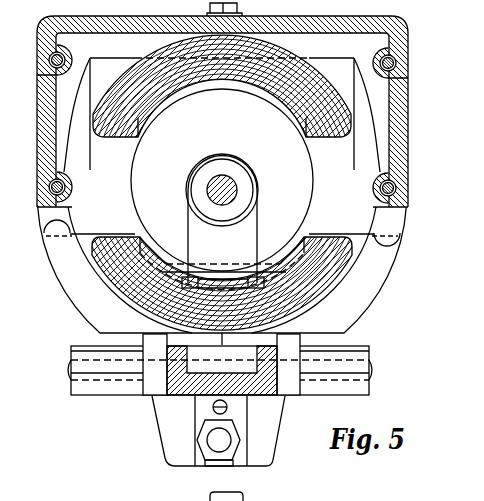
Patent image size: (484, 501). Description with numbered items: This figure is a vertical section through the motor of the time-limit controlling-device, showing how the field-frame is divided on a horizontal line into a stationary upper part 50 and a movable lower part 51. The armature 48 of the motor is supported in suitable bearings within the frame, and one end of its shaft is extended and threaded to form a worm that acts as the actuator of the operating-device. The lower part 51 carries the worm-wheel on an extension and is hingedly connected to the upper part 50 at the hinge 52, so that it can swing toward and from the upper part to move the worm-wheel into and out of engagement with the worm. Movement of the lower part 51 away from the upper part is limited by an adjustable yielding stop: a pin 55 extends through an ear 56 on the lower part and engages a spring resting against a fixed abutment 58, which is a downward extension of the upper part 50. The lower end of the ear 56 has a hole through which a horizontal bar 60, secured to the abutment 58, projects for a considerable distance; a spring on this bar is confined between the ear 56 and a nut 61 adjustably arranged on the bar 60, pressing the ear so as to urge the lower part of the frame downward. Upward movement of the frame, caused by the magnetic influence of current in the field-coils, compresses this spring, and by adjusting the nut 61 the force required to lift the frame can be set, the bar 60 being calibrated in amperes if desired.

The armature 48 is at (230, 188).
The upper part of the field-frame 50 is at (354, 158).
The lower part of the field-frame 51 is at (372, 279).
The hinge 52 is at (372, 369).
The pin 55 is at (213, 406).
The ear 56 is at (200, 427).
The fixed abutment 58 is at (172, 450).
The bar 60 is at (217, 443).
The nut 61 is at (237, 443).